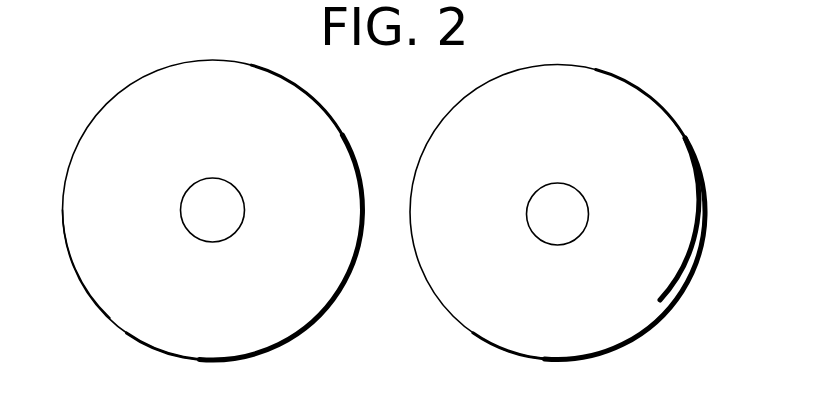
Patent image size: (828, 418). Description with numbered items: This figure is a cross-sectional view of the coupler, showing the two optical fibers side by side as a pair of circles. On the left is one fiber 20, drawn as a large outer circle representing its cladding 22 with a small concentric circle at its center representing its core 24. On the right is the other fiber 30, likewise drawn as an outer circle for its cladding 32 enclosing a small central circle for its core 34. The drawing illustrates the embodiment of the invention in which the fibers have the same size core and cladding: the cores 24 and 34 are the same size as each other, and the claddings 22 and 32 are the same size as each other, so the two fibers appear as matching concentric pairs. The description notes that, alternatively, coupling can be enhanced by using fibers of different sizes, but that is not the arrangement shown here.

The first disk 20 is at (250, 355).
The cladding 22 is at (122, 307).
The core 24 is at (228, 213).
The second disk 30 is at (615, 350).
The cladding 32 is at (672, 276).
The core 34 is at (570, 220).